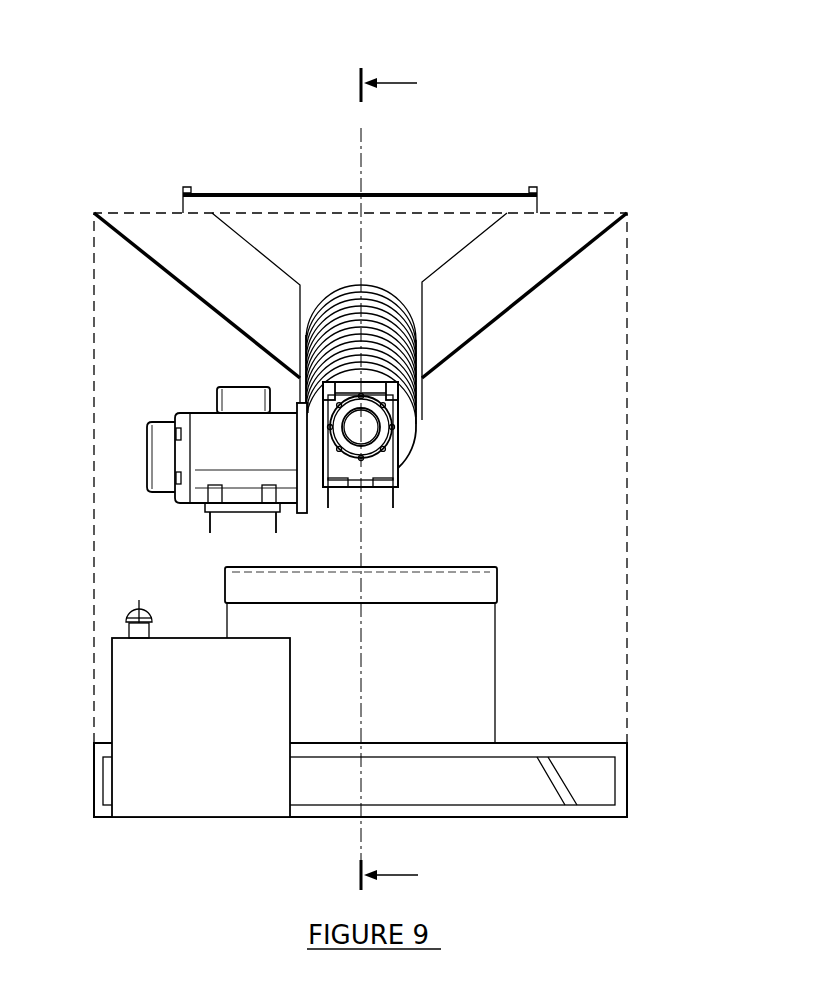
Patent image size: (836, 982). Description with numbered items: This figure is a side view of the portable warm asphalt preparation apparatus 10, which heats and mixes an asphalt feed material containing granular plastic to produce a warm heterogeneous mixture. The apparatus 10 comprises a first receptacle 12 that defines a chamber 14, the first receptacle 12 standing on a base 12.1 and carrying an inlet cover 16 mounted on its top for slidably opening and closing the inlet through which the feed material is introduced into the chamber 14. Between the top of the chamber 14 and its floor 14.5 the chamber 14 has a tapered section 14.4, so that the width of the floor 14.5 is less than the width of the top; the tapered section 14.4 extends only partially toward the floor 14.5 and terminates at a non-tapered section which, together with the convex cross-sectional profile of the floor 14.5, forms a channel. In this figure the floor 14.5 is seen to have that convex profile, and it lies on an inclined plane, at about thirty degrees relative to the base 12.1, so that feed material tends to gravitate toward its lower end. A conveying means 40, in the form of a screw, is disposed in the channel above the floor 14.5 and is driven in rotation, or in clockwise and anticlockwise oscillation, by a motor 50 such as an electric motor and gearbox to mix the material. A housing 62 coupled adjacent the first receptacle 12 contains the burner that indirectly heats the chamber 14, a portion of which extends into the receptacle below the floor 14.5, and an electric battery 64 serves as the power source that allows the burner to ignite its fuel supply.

The portable warm asphalt preparation apparatus 10 is at (664, 64).
The first receptacle 12 is at (606, 213).
The base 12.1 is at (592, 743).
The chamber 14 is at (421, 258).
The tapered section 14.4 is at (493, 322).
The floor 14.5 is at (398, 468).
The inlet cover 16 is at (349, 187).
The conveying means 40 is at (413, 318).
The motor 50 is at (124, 410).
The housing 62 is at (495, 628).
The electric battery 64 is at (200, 637).